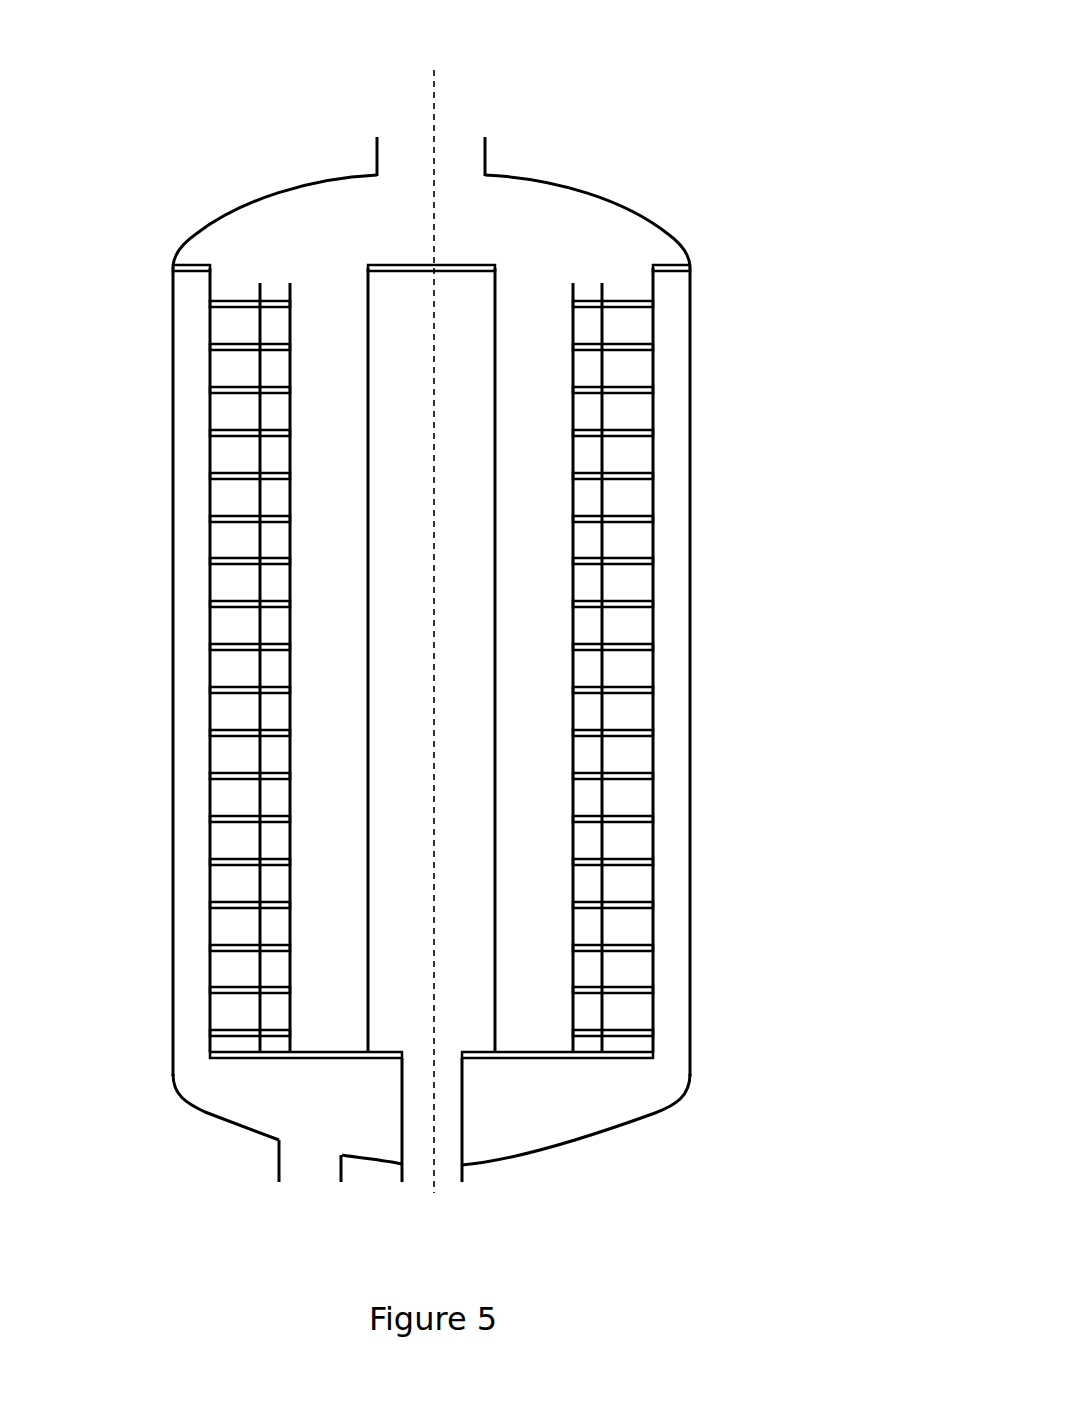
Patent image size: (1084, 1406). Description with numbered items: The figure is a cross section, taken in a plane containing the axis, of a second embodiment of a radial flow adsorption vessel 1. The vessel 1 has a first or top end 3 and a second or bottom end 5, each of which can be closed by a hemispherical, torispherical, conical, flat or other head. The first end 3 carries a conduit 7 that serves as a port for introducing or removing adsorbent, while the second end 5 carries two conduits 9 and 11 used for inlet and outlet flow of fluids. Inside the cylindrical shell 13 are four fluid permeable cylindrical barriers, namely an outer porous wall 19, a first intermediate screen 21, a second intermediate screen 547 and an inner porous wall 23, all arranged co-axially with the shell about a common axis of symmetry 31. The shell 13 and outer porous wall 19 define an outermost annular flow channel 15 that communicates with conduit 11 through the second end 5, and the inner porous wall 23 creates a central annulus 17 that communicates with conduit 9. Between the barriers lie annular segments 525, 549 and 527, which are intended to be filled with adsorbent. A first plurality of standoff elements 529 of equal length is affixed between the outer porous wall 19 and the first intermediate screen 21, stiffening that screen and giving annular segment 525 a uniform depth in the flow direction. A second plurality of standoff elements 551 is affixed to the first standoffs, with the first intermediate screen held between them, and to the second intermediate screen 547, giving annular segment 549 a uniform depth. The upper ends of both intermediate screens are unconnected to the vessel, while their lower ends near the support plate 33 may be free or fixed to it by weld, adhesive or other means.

The vessel 1 is at (720, 400).
The first end 3 is at (608, 203).
The second end 5 is at (637, 1120).
The conduit 7 is at (457, 148).
The conduit 9 is at (447, 1155).
The conduit 11 is at (308, 1170).
The cylindrical shell 13 is at (690, 712).
The outermost annular flow channel 15 is at (667, 867).
The central annulus 17 is at (465, 542).
The outer porous wall 19 is at (210, 827).
The first intermediate screen 21 is at (263, 918).
The inner porous wall 23 is at (368, 1007).
The axis of symmetry 31 is at (432, 78).
The support plate 33 is at (530, 1052).
The annular segment 525 is at (233, 545).
The annular segment 527 is at (542, 630).
The first plurality of standoff elements 529 is at (245, 685).
The second intermediate screen 547 is at (288, 458).
The annular segment 549 is at (278, 375).
The second plurality of standoff elements 551 is at (282, 348).